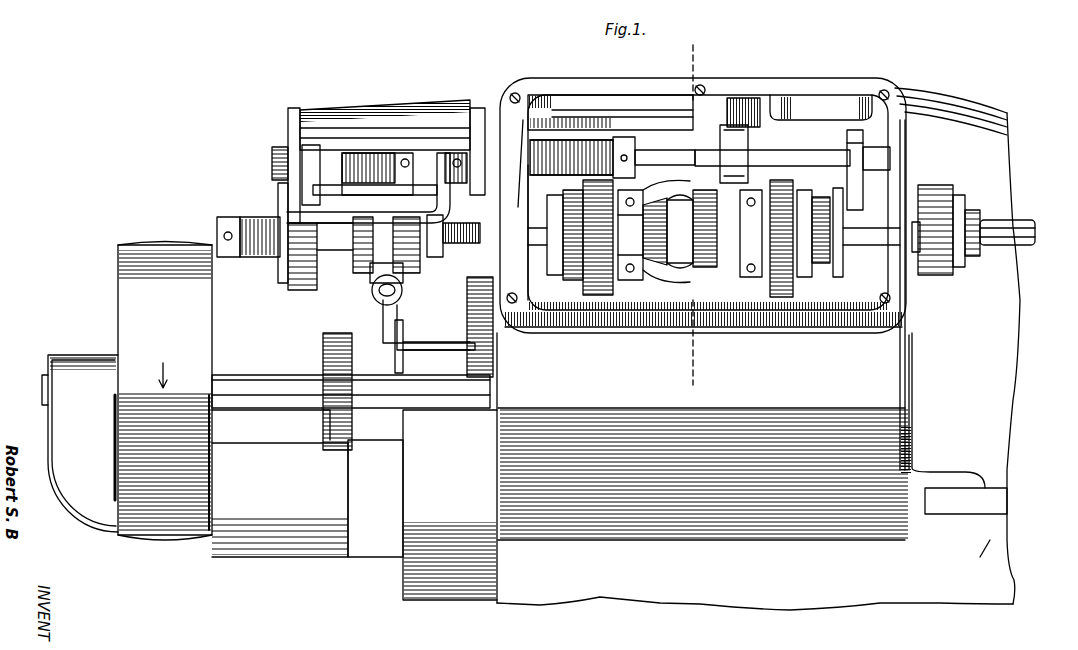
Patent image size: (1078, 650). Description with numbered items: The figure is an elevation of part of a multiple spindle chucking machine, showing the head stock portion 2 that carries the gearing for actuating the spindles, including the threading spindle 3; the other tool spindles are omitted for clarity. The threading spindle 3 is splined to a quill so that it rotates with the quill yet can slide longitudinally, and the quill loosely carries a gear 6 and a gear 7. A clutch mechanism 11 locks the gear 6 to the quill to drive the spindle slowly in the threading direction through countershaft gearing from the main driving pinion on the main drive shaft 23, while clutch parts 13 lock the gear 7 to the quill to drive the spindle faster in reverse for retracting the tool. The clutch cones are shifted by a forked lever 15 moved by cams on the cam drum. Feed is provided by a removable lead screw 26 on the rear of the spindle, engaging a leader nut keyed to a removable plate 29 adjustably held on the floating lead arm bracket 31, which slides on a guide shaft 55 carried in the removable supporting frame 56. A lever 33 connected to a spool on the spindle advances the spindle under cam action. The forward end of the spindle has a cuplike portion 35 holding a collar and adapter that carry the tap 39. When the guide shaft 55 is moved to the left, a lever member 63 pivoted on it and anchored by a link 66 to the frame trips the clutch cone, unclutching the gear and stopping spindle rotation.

The head stock portion 2 is at (758, 349).
The threading spindle 3 is at (689, 55).
The gear 6 is at (818, 298).
The gear 7 is at (580, 296).
The clutch mechanism 11 is at (782, 298).
The clutch parts 13 is at (626, 296).
The lever 15 is at (735, 296).
The main drive shaft 23 is at (285, 380).
The lead screw 26 is at (262, 257).
The removable plate 29 is at (283, 285).
The floating lead arm bracket 31 is at (332, 192).
The lever 33 is at (378, 306).
The cuplike portion 35 is at (938, 186).
The tap 39 is at (1005, 246).
The guide shaft 55 is at (650, 150).
The supporting frame 56 is at (820, 330).
The lever member 63 is at (705, 130).
The link 66 is at (812, 160).